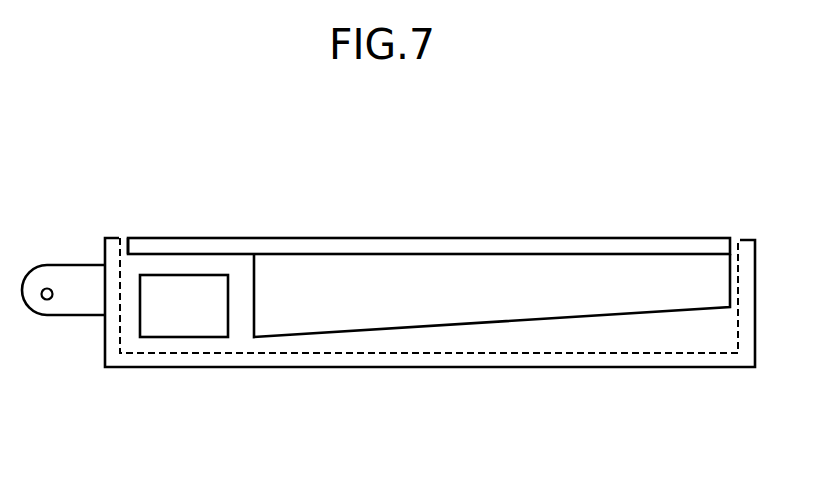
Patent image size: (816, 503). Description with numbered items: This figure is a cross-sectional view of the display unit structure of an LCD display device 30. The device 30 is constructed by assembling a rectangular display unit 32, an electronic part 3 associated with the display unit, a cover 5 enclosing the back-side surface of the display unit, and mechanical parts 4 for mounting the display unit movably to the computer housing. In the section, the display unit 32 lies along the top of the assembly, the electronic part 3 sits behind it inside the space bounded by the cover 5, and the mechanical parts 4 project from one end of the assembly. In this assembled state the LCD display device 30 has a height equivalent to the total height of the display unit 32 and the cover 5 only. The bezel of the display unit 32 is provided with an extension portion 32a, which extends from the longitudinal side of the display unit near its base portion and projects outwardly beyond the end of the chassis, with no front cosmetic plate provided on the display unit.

The electronic part 3 is at (187, 282).
The mechanical parts 4 is at (59, 275).
The cover 5 is at (692, 368).
The LCD display device 30 is at (643, 223).
The display unit 32 is at (317, 265).
The extension portion 32a is at (126, 233).